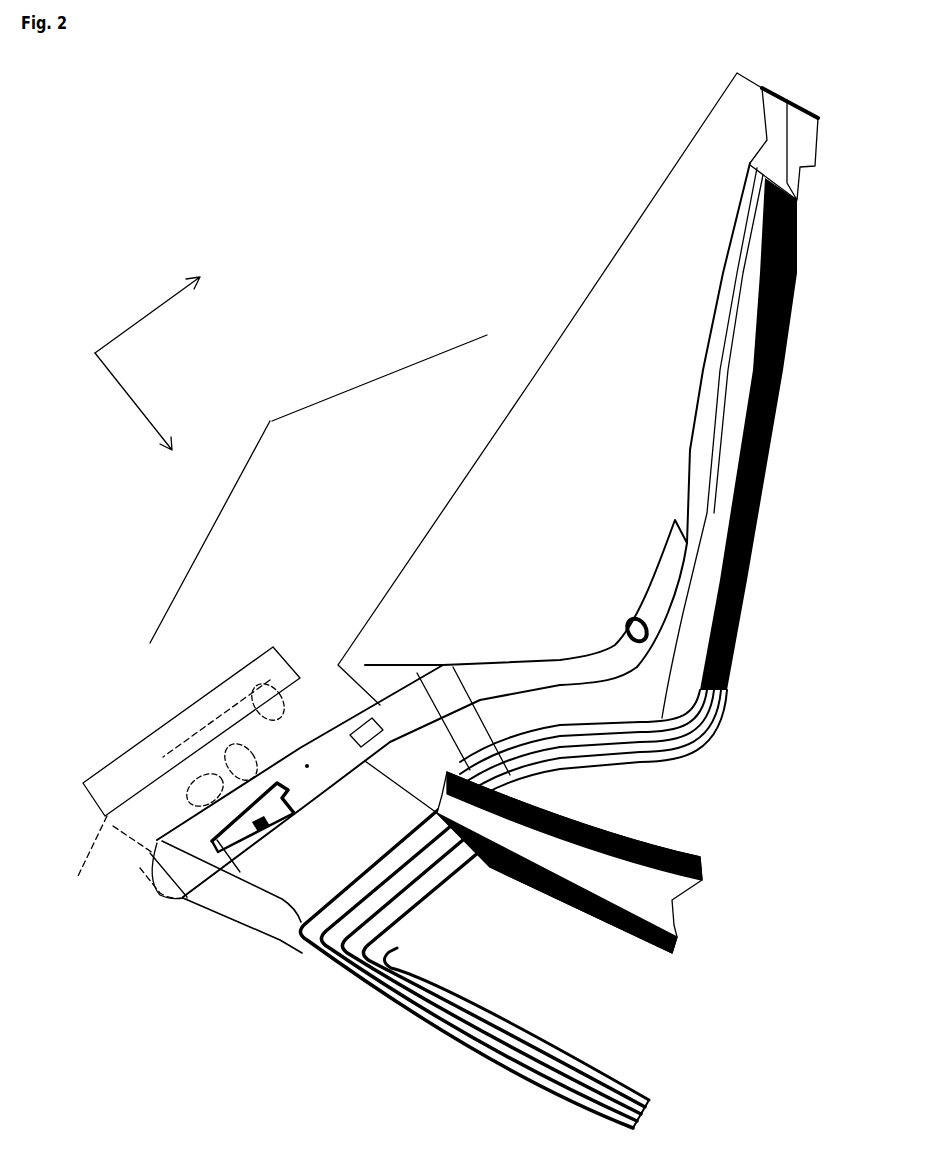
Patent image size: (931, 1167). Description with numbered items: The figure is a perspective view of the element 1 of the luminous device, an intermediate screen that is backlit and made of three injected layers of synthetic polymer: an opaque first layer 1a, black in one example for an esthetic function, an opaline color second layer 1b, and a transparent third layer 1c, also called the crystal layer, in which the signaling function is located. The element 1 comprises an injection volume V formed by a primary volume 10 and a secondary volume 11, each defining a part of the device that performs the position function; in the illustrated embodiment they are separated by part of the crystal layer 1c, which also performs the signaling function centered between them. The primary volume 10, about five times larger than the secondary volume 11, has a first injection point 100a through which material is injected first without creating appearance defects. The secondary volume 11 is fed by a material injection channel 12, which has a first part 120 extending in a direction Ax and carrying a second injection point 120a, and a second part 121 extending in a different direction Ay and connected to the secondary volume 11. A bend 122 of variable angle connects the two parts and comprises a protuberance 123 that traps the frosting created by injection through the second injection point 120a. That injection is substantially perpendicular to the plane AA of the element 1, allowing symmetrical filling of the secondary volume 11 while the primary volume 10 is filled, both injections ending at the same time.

The element 1 is at (445, 246).
The primary volume 10 is at (535, 375).
The first injection point 100a is at (628, 625).
The first layer 1a is at (367, 665).
The second layer 1b is at (650, 690).
The third layer 1c is at (430, 885).
The secondary volume 11 is at (177, 717).
The material injection channel 12 is at (138, 867).
The first part 120 is at (203, 786).
The second injection point 120a is at (195, 820).
The second part 121 is at (157, 850).
The bend 122 is at (238, 754).
The protuberance 123 is at (265, 702).
The direction Ax is at (171, 295).
The direction Ay is at (157, 401).
The injection volume V is at (318, 489).
The plane AA is at (345, 831).